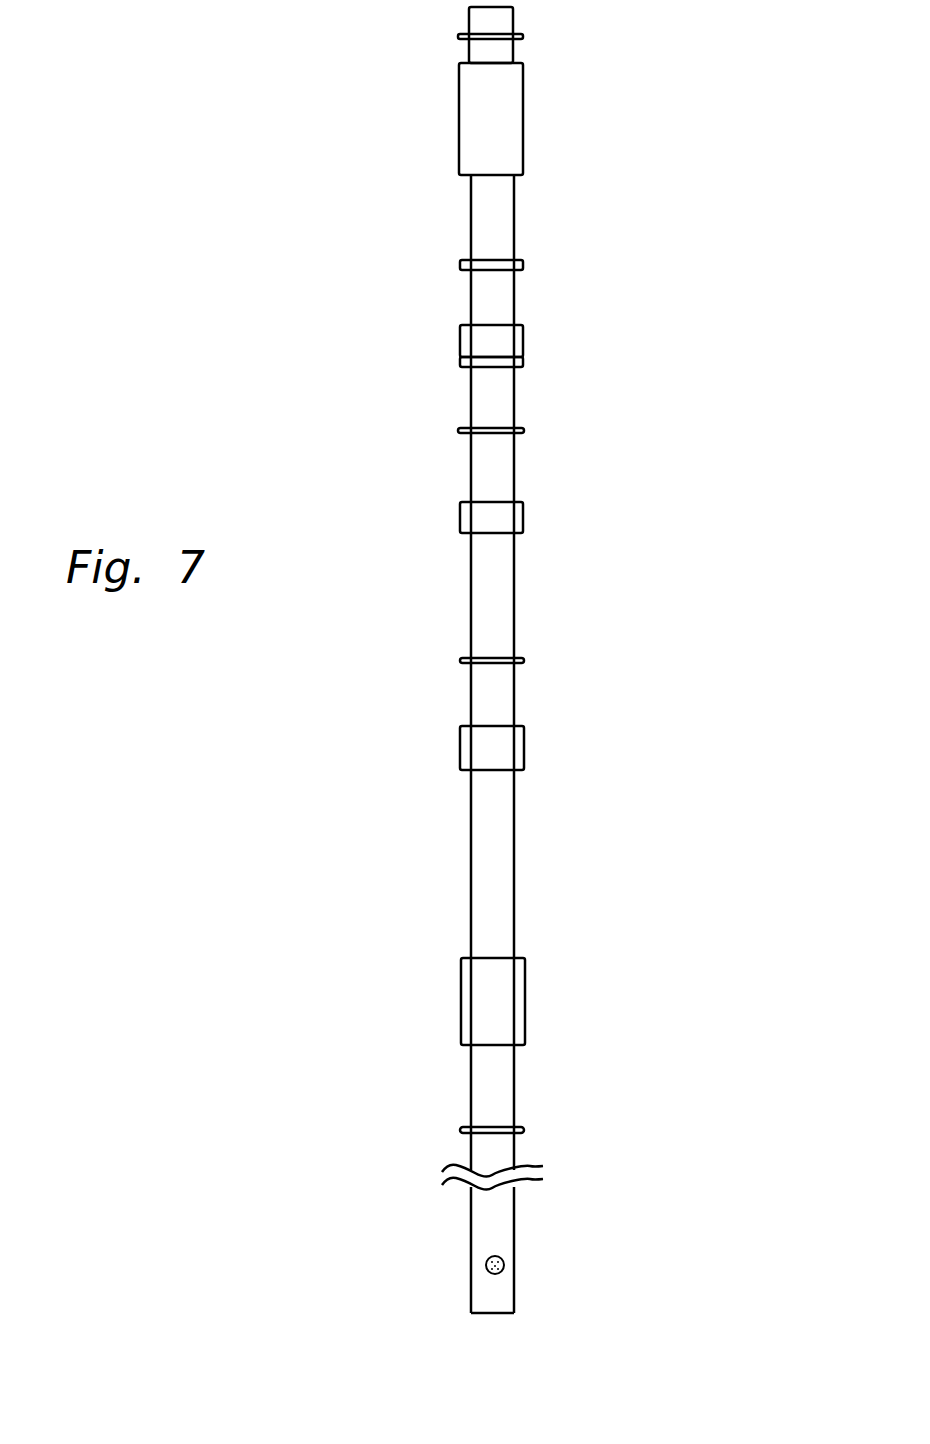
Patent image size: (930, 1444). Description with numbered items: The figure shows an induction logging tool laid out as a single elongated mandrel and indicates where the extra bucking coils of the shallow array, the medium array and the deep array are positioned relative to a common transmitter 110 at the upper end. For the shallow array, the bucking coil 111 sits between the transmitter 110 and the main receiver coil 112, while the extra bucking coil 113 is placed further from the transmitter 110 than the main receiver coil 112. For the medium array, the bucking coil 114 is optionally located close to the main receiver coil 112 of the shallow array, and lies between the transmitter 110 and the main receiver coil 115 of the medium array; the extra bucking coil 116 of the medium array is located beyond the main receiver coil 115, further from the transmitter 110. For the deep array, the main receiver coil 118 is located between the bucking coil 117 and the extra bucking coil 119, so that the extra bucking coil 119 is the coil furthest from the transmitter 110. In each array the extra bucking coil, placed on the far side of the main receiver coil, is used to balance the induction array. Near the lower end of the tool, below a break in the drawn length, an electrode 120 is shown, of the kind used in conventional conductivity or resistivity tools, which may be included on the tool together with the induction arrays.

The transmitter 110 is at (525, 113).
The bucking coil 111 is at (525, 262).
The main receiver coil 112 is at (525, 331).
The bucking coil 114 is at (525, 361).
The extra bucking coil 113 is at (524, 431).
The main receiver coil 115 is at (525, 516).
The extra bucking coil 116 is at (524, 661).
The bucking coil 117 is at (525, 741).
The main receiver coil 118 is at (526, 995).
The extra bucking coil 119 is at (524, 1130).
The electrode 120 is at (504, 1262).